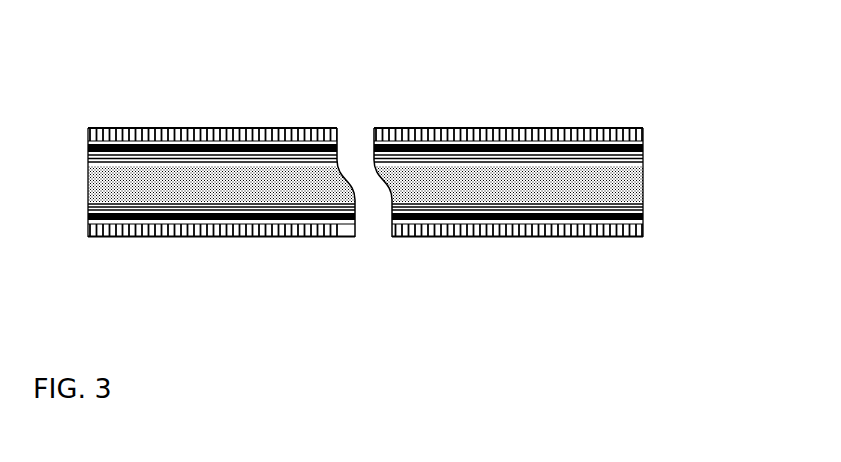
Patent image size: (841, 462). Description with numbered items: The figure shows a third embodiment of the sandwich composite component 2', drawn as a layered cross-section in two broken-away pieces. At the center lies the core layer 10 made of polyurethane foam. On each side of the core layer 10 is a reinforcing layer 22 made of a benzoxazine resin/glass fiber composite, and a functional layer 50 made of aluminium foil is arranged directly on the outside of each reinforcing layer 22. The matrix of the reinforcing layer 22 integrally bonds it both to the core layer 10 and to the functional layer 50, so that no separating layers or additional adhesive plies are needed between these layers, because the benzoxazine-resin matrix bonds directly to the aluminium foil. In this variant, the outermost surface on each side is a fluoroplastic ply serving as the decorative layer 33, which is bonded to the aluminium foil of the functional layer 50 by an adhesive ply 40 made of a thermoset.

The sandwich composite component 2' is at (657, 24).
The core layer 10 is at (632, 182).
The reinforcing layer 22 is at (643, 162).
The decorative layer 33 is at (643, 130).
The adhesive ply 40 is at (643, 143).
The functional layer 50 is at (643, 150).